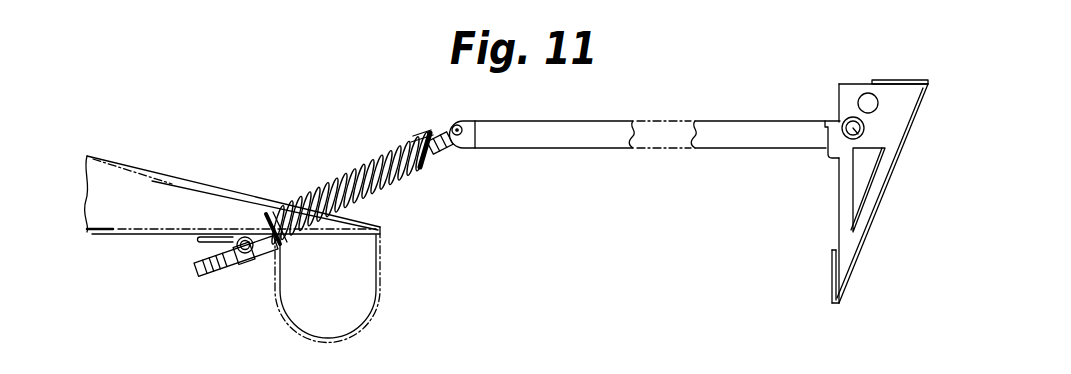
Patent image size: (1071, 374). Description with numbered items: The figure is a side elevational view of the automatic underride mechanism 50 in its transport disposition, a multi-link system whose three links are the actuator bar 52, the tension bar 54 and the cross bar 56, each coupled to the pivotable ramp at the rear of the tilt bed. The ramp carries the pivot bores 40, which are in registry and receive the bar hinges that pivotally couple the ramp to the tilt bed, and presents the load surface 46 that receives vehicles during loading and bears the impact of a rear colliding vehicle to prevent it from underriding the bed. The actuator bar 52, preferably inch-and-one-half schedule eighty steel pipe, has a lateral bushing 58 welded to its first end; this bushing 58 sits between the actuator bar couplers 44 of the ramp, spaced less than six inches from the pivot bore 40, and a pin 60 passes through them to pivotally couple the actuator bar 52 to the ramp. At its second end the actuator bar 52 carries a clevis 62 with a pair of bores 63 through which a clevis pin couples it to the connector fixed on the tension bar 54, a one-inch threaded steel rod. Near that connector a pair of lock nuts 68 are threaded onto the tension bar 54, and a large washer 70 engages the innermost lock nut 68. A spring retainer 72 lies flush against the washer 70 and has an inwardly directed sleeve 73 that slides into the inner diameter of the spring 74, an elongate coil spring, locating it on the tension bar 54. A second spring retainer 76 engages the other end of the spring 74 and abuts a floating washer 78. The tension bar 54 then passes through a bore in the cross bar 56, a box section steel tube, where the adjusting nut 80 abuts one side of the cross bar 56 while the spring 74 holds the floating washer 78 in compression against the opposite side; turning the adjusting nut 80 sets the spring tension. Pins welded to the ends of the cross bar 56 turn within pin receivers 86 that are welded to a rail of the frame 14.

The frame 14 is at (180, 178).
The pivot bores 40 is at (849, 197).
The actuator bar coupler 44 is at (856, 134).
The load surface 46 is at (853, 277).
The automatic underride mechanism 50 is at (333, 110).
The actuator bar 52 is at (645, 143).
The tension bar 54 is at (359, 163).
The cross bar 56 is at (210, 243).
The lateral bushing 58 is at (875, 125).
The pin 60 is at (840, 122).
The clevis 62 is at (467, 148).
The bores 63 is at (458, 124).
The lock nuts 68 is at (450, 152).
The large washer 70 is at (418, 133).
The spring retainer 72 is at (418, 170).
The sleeve 73 is at (410, 145).
The spring 74 is at (350, 180).
The second spring retainer 76 is at (300, 208).
The floating washer 78 is at (293, 243).
The adjusting nut 80 is at (237, 268).
The pin receiver 86 is at (197, 240).